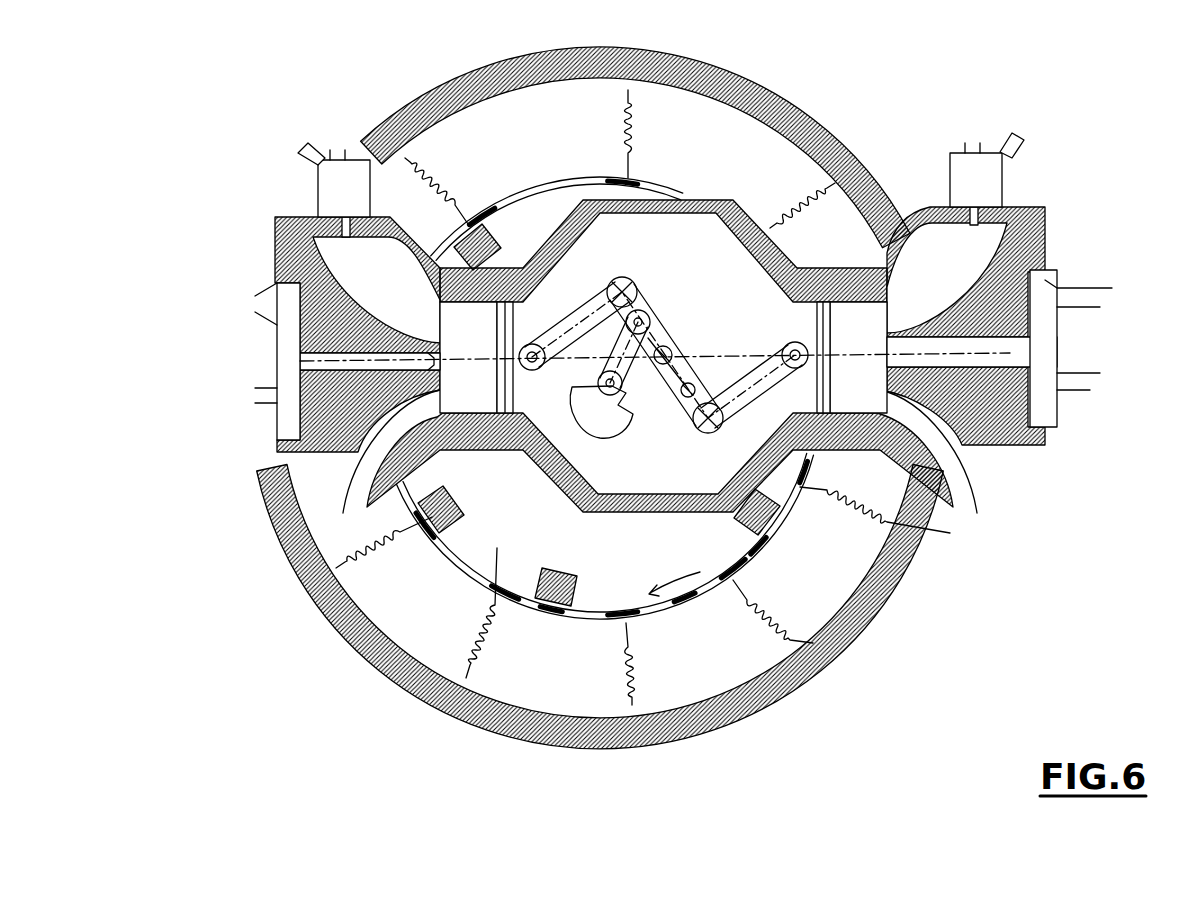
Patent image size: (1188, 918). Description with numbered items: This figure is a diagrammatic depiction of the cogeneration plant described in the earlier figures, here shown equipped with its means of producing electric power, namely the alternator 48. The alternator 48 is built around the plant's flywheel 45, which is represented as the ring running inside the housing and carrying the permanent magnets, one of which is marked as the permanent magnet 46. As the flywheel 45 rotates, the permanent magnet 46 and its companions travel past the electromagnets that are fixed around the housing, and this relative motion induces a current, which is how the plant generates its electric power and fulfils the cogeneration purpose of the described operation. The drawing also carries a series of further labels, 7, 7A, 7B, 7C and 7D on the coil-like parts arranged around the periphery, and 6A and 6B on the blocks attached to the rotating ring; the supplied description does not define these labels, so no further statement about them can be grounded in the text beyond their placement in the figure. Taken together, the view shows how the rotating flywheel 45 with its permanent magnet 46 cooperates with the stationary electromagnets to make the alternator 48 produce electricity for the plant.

The flywheel 45 is at (527, 227).
The permanent magnet 46 is at (497, 548).
The alternator 48 is at (693, 160).
The spring 7 is at (405, 538).
The spring 7A is at (468, 690).
The spring 7B is at (642, 700).
The spring 7C is at (813, 643).
The spring 7D is at (950, 533).
The pole piece 6A is at (545, 607).
The pole piece 6B is at (773, 537).